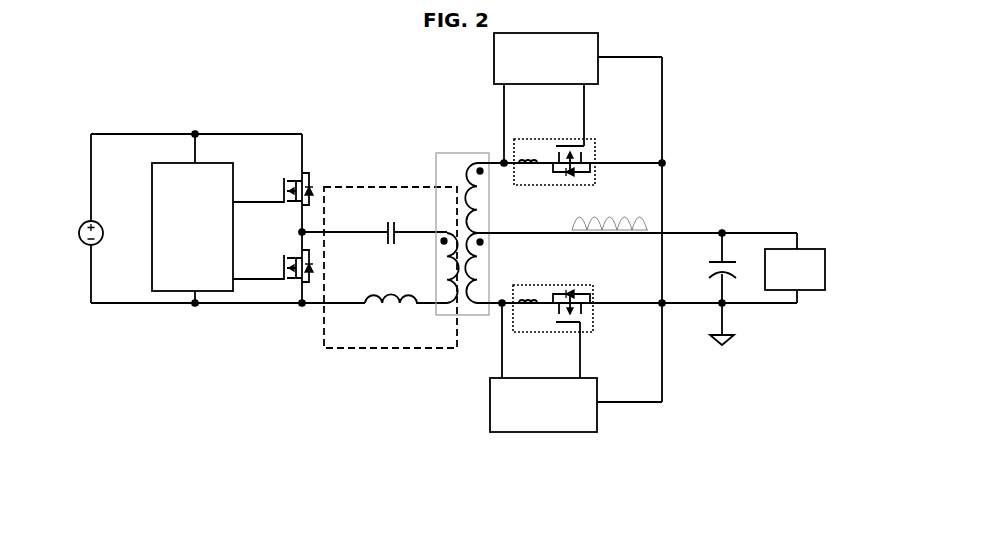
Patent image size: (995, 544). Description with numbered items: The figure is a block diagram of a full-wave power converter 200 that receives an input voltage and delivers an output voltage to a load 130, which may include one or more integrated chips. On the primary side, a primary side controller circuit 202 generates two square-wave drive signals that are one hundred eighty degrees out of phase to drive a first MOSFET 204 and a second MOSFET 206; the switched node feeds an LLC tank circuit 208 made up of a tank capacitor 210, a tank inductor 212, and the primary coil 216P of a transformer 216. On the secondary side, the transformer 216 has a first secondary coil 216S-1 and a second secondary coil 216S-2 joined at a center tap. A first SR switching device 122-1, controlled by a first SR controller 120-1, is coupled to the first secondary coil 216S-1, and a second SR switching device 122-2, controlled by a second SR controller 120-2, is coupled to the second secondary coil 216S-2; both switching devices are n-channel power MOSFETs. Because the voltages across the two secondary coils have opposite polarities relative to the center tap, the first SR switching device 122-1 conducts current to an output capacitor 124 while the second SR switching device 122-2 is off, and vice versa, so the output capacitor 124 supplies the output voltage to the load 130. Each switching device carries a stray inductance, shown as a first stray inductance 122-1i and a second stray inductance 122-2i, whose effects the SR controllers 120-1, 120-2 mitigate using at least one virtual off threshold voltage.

The full-wave power converter 200 is at (276, 75).
The primary side controller circuit 202 is at (150, 195).
The first MOSFET 204 is at (293, 173).
The second MOSFET 206 is at (293, 250).
The LLC tank circuit 208 is at (375, 187).
The tank capacitor 210 is at (386, 222).
The tank inductor 212 is at (383, 300).
The transformer 216 is at (463, 153).
The primary coil 216P is at (447, 270).
The first secondary coil 216S-1 is at (483, 267).
The second secondary coil 216S-2 is at (483, 214).
The first SR controller 120-1 is at (490, 396).
The second SR controller 120-2 is at (494, 63).
The first SR switching device 122-1 is at (592, 322).
The first stray inductance 122-1i is at (519, 307).
The second SR switching device 122-2 is at (594, 139).
The second stray inductance 122-2i is at (521, 158).
The output capacitor 124 is at (712, 262).
The load 130 is at (826, 261).